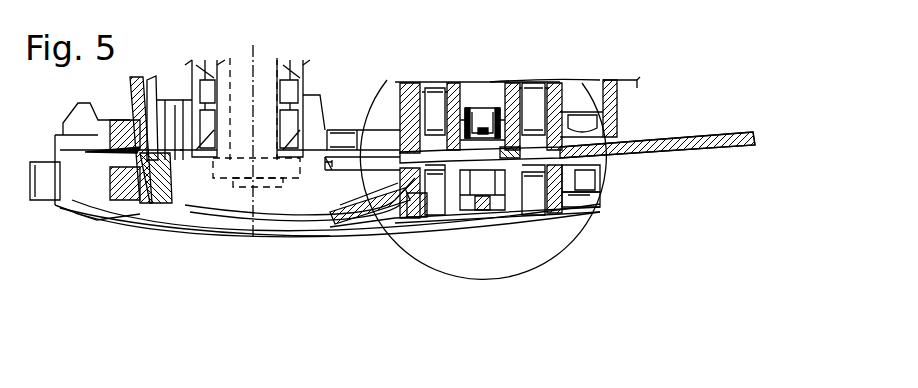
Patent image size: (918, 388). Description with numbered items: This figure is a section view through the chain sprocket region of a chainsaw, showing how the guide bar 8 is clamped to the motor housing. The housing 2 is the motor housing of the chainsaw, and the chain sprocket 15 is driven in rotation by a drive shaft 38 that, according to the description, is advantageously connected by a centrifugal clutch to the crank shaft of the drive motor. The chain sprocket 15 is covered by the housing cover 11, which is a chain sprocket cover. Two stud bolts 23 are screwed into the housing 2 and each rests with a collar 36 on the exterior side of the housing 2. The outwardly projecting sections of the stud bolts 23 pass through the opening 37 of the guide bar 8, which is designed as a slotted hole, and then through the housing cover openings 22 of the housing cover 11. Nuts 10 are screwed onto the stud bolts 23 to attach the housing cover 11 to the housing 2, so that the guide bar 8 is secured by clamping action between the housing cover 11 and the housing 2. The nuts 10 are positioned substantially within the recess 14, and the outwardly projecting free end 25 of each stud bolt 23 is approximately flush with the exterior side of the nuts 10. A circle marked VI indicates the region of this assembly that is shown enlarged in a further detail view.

The housing 2 is at (617, 115).
The guide bar 8 is at (680, 140).
The nuts 10 is at (510, 216).
The housing cover 11 is at (196, 230).
The recess 14 is at (400, 230).
The chain sprocket 15 is at (226, 176).
The housing cover openings 22 is at (416, 160).
The stud bolts 23 is at (432, 210).
The free end 25 is at (536, 224).
The collar 36 is at (432, 128).
The opening 37 is at (353, 168).
The drive shaft 38 is at (262, 73).
The detail section indicator VI is at (560, 258).